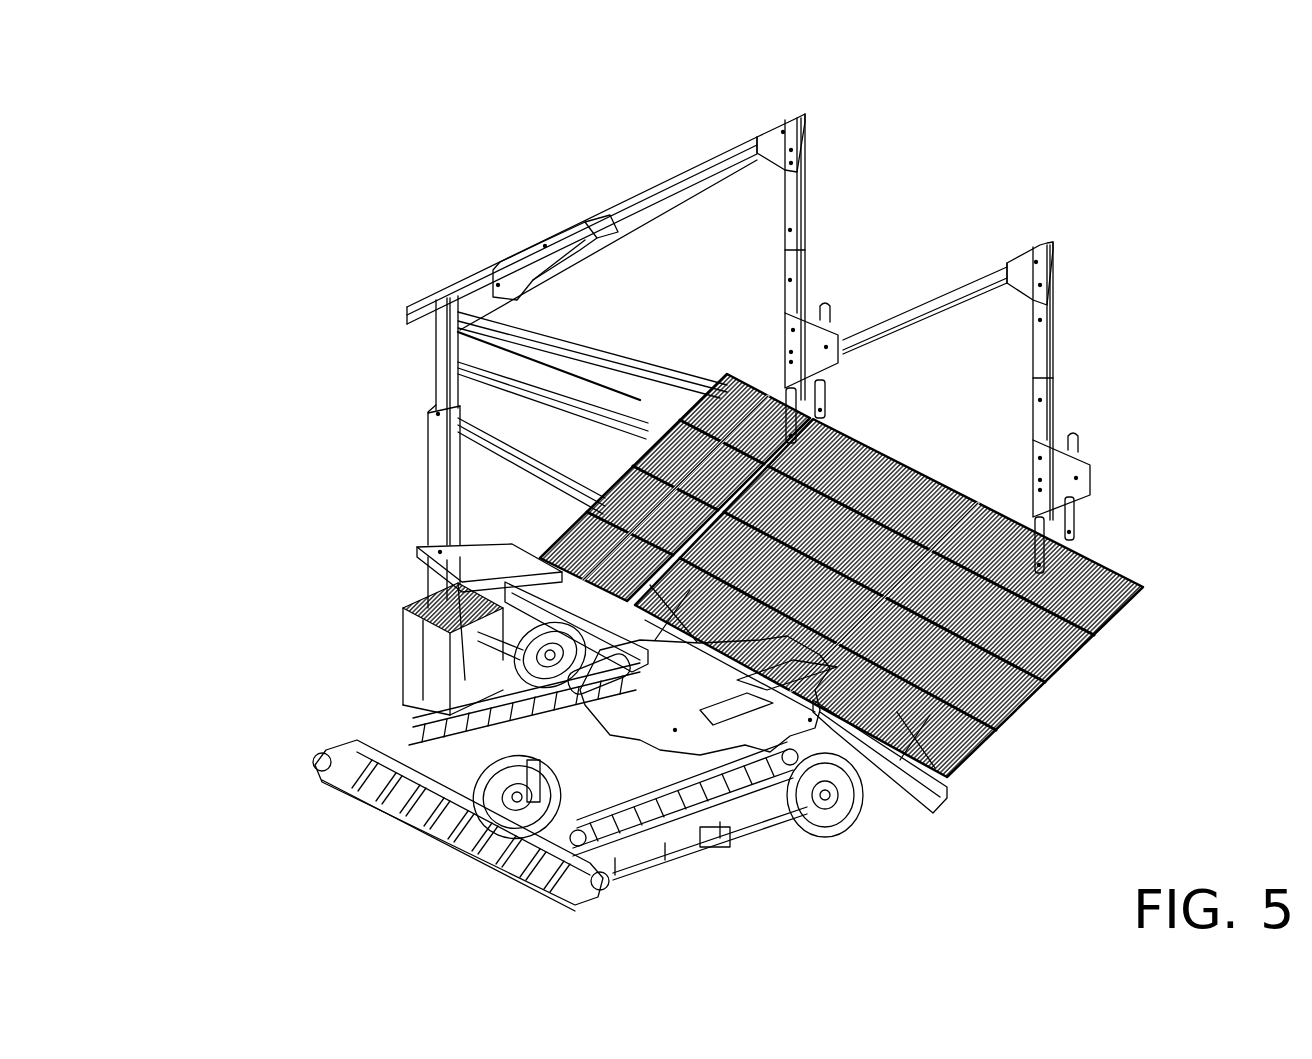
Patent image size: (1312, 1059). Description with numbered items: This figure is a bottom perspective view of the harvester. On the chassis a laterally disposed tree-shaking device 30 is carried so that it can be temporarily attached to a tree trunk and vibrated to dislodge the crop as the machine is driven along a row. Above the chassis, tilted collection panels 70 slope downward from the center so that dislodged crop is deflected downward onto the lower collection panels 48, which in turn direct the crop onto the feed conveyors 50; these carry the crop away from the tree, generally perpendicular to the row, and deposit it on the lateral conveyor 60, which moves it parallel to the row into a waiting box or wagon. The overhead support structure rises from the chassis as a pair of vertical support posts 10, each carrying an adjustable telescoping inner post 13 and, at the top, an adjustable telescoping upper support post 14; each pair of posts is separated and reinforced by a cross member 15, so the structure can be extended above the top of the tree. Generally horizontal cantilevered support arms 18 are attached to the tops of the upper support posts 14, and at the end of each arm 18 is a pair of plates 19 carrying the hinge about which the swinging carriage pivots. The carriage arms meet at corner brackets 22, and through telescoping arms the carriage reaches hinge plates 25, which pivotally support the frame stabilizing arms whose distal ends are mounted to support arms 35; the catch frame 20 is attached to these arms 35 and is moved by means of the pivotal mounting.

The vertical support post 10 is at (423, 576).
The telescoping inner post 13 is at (430, 497).
The upper support post 14 is at (433, 343).
The cross member 15 is at (647, 352).
The cantilevered support arm 18 is at (463, 283).
The plate 19 is at (557, 222).
The catch frame 20 is at (918, 462).
The corner bracket 22 is at (776, 133).
The hinge plate 25 is at (800, 320).
The tree-shaking device 30 is at (743, 737).
The support arm 35 is at (847, 385).
The collection panel 48 is at (540, 612).
The feed conveyor 50 is at (620, 847).
The lateral conveyor 60 is at (427, 820).
The collection panel 70 is at (470, 563).